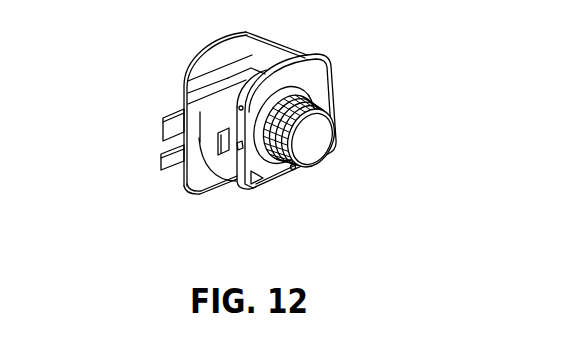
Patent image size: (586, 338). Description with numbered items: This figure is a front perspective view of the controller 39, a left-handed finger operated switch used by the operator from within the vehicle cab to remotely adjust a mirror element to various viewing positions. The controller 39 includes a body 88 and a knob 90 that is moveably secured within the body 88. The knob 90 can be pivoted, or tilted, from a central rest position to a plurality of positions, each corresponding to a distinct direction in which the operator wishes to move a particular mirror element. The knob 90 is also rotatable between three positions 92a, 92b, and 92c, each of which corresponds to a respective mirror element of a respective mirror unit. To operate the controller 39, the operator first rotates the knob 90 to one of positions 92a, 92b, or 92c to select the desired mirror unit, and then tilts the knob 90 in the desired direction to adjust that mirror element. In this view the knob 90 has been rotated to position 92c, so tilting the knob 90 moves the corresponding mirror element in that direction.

The controller 39 is at (433, 95).
The body 88 is at (249, 58).
The knob 90 is at (312, 138).
The position 92a is at (190, 80).
The position 92b is at (230, 146).
The position 92c is at (246, 182).